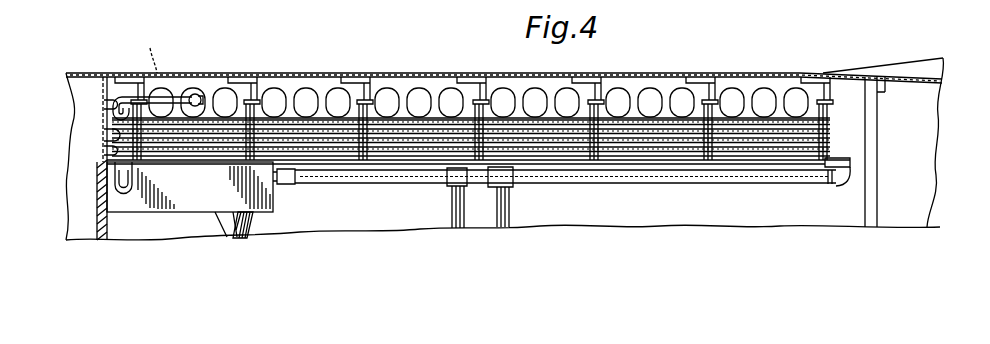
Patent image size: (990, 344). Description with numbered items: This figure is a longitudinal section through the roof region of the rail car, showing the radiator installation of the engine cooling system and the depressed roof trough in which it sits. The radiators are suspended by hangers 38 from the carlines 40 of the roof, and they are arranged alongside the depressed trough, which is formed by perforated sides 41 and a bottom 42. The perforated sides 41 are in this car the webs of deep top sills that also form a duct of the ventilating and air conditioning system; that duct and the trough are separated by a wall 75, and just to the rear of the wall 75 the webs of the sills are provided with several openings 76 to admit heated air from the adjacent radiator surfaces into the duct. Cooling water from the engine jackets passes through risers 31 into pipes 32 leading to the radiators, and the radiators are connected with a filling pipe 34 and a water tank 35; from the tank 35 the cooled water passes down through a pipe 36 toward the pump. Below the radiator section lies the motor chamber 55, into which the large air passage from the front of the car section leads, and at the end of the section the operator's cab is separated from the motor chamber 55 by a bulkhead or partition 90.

The openings 76 is at (103, 96).
The wall 75 is at (119, 94).
The filling pipe 34 is at (190, 95).
The carlines 40 is at (253, 82).
The hangers 38 is at (352, 93).
The perforated sides 41 is at (437, 85).
The bottom 42 is at (398, 164).
The pipes 32 is at (616, 176).
The risers 31 is at (460, 211).
The motor chamber 55 is at (503, 220).
The water tank 35 is at (158, 203).
The pipe 36 is at (255, 220).
The bulkhead or partition 90 is at (877, 207).